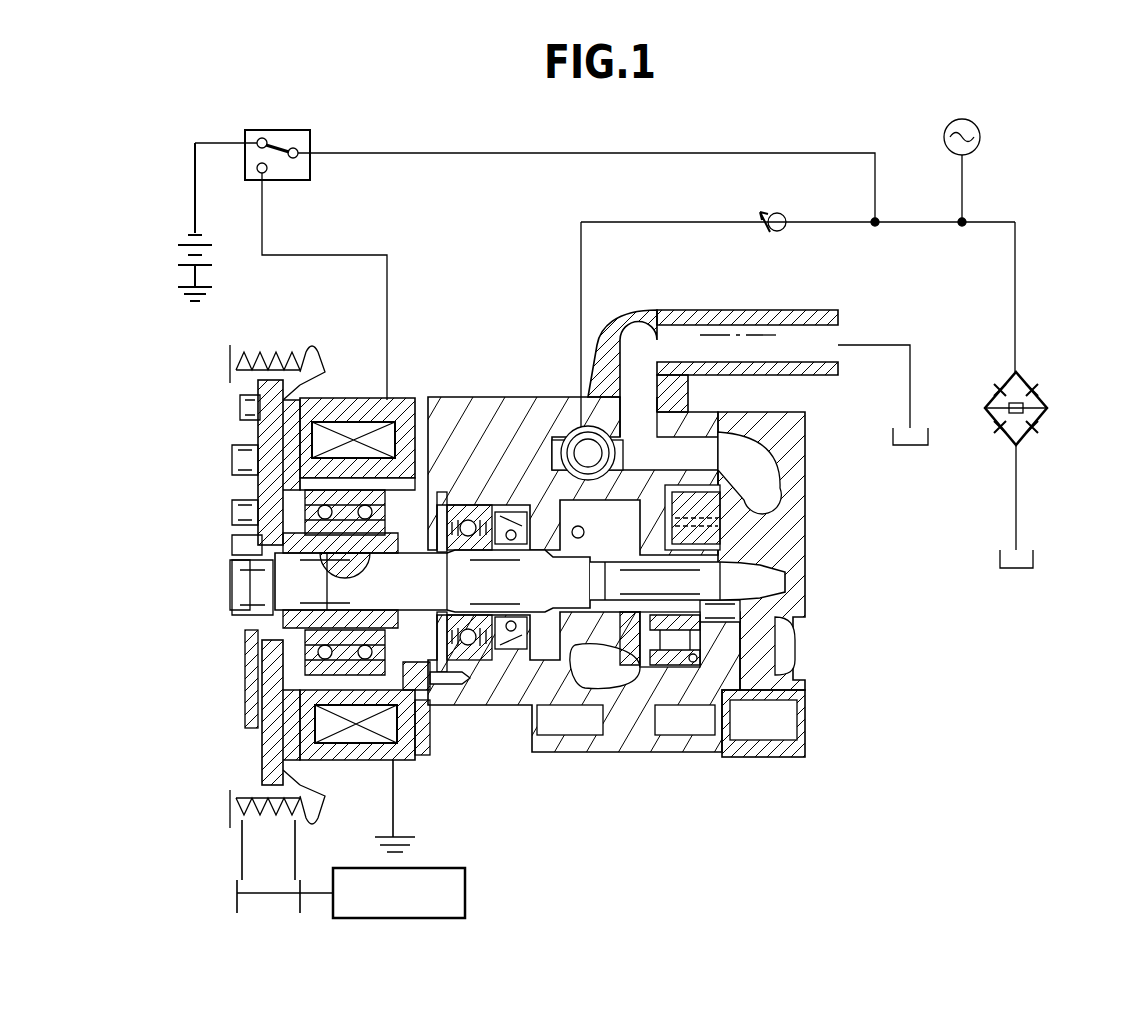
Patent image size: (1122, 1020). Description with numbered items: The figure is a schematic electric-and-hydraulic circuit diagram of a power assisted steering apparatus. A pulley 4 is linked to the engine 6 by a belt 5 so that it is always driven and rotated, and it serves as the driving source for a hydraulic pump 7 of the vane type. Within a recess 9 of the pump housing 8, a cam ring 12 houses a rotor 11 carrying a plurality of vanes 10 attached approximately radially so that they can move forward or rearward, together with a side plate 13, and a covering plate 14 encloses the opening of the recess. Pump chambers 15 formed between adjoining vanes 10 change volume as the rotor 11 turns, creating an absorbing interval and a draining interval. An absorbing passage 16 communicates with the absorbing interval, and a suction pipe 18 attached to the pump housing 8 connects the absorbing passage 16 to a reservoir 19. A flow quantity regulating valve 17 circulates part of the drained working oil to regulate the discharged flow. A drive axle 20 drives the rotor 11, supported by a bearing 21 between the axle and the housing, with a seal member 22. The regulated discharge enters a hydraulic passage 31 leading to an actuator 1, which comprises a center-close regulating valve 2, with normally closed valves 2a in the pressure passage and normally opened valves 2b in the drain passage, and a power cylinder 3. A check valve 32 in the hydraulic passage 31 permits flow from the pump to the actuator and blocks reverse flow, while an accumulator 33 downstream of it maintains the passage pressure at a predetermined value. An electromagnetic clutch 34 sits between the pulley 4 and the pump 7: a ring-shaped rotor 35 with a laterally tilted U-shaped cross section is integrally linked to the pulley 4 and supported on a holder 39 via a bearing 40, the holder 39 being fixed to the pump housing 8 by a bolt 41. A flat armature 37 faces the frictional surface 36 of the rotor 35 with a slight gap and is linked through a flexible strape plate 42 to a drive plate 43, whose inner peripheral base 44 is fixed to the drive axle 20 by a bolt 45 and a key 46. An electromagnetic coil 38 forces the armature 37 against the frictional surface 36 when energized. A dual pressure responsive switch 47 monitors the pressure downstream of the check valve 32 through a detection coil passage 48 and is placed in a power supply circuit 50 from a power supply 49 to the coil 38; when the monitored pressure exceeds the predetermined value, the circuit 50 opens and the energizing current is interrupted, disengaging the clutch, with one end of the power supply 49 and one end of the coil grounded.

The actuator 1 is at (1050, 406).
The regulating valve 2 is at (986, 418).
The normally closed valves 2a is at (995, 386).
The normally opened valves 2b is at (996, 432).
The power cylinder 3 is at (1012, 402).
The pulley 4 is at (292, 345).
The belt 5 is at (240, 845).
The engine 6 is at (466, 893).
The hydraulic pump 7 is at (587, 762).
The pump housing 8 is at (540, 756).
The recess 9 is at (708, 688).
The vanes 10 is at (745, 528).
The rotor 11 is at (722, 612).
The cam ring 12 is at (755, 685).
The side plate 13 is at (646, 682).
The covering plate 14 is at (742, 758).
The pump chambers 15 is at (760, 655).
The absorbing passage 16 is at (765, 457).
The flow quantity regulating valve 17 is at (578, 432).
The suction pipe 18 is at (658, 320).
The reservoir 19 is at (890, 436).
The drive axle 20 is at (585, 592).
The bearing 21 is at (445, 505).
The seal member 22 is at (500, 512).
The hydraulic passage 31 is at (694, 222).
The check valve 32 is at (786, 214).
The accumulator 33 is at (978, 150).
The electromagnetic clutch 34 is at (242, 716).
The rotor 35 is at (352, 762).
The frictional surface 36 is at (305, 795).
The armature 37 is at (270, 752).
The electromagnetic coil 38 is at (346, 425).
The holder 39 is at (425, 756).
The bearing 40 is at (250, 680).
The bolt 41 is at (445, 688).
The flexible strape plate 42 is at (258, 422).
The drive plate 43 is at (258, 497).
The inner peripheral base 44 is at (245, 556).
The bolt 45 is at (240, 606).
The key 46 is at (365, 560).
The dual pressure responsive switch 47 is at (312, 136).
The detection coil passage 48 is at (658, 153).
The power supply 49 is at (178, 252).
The power supply circuit 50 is at (375, 255).